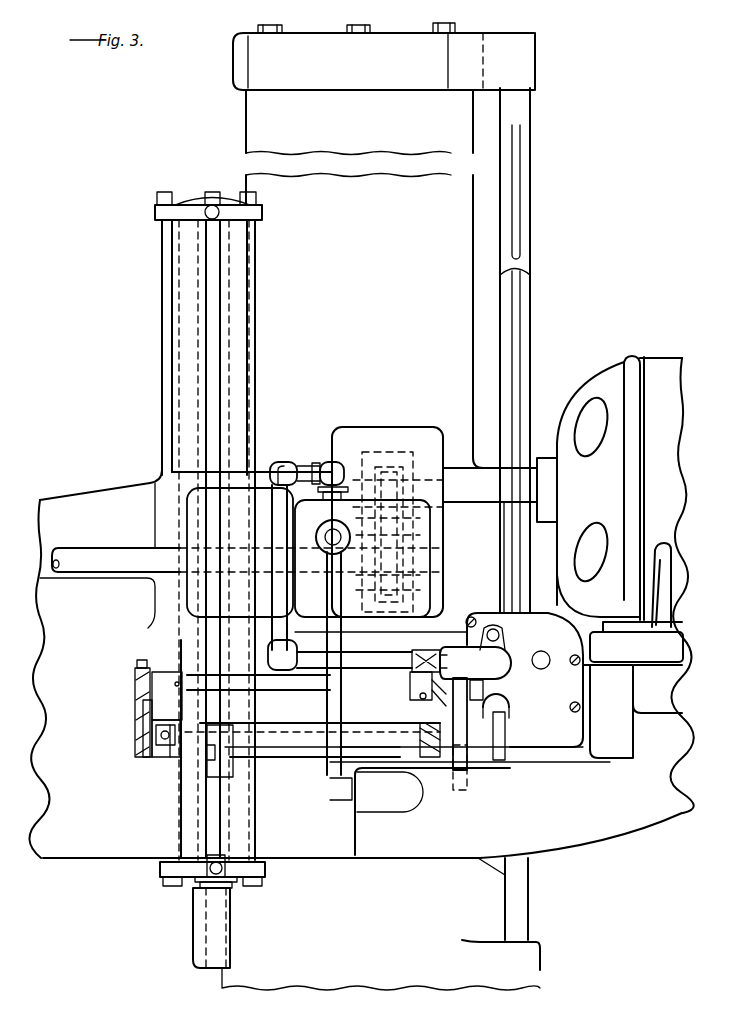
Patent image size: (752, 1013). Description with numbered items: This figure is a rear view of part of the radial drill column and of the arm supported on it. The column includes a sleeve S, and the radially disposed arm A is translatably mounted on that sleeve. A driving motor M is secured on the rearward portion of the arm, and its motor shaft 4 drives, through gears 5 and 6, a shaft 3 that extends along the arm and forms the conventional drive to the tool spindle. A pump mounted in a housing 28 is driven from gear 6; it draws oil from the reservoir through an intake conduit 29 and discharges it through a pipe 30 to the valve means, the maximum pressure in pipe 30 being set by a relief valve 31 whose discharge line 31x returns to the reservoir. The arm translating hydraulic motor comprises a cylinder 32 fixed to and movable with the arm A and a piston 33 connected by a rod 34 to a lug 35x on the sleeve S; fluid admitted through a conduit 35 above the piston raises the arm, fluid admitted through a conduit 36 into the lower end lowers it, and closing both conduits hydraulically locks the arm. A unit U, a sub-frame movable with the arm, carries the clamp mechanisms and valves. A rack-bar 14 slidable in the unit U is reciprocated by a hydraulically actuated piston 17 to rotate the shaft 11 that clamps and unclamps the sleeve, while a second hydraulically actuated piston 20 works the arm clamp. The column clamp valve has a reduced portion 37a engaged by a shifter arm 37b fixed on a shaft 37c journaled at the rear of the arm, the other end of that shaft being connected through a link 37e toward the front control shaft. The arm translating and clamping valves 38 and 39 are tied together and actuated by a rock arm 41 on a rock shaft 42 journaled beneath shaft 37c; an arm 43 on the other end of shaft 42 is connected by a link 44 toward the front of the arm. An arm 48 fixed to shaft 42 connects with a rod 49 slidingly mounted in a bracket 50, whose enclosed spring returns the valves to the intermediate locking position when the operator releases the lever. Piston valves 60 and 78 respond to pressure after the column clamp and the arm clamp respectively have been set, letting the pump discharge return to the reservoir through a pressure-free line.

The shaft 3 is at (113, 547).
The motor shaft 4 is at (500, 490).
The gear 5 is at (396, 470).
The gear 6 is at (400, 528).
The shaft 11 is at (530, 284).
The rack-bar 14 is at (545, 668).
The piston 17 is at (531, 646).
The piston 20 is at (523, 707).
The housing 28 is at (427, 588).
The intake conduit 29 is at (332, 600).
The pipe 30 is at (303, 463).
The relief valve 31 is at (475, 652).
The discharge line 31x is at (452, 752).
The cylinder 32 is at (185, 385).
The piston 33 is at (186, 255).
The rod 34 is at (198, 428).
The conduit 35 is at (216, 329).
The lug 35x is at (193, 940).
The conduit 36 is at (222, 812).
The reduced portion 37a is at (152, 680).
The shifter arm 37b is at (410, 682).
The shaft 37c is at (286, 684).
The link 37e is at (145, 708).
The valve 38 is at (418, 701).
The valve 39 is at (440, 703).
The rock arm 41 is at (499, 692).
The rock shaft 42 is at (293, 736).
The arm 43 is at (148, 752).
The link 44 is at (148, 740).
The arm 48 is at (163, 750).
The rod 49 is at (170, 748).
The bracket 50 is at (160, 694).
The piston valve 60 is at (493, 628).
The piston valve 78 is at (508, 725).
The arm A is at (90, 860).
The sleeve S is at (381, 506).
The driving motor M is at (651, 365).
The unit U is at (523, 635).